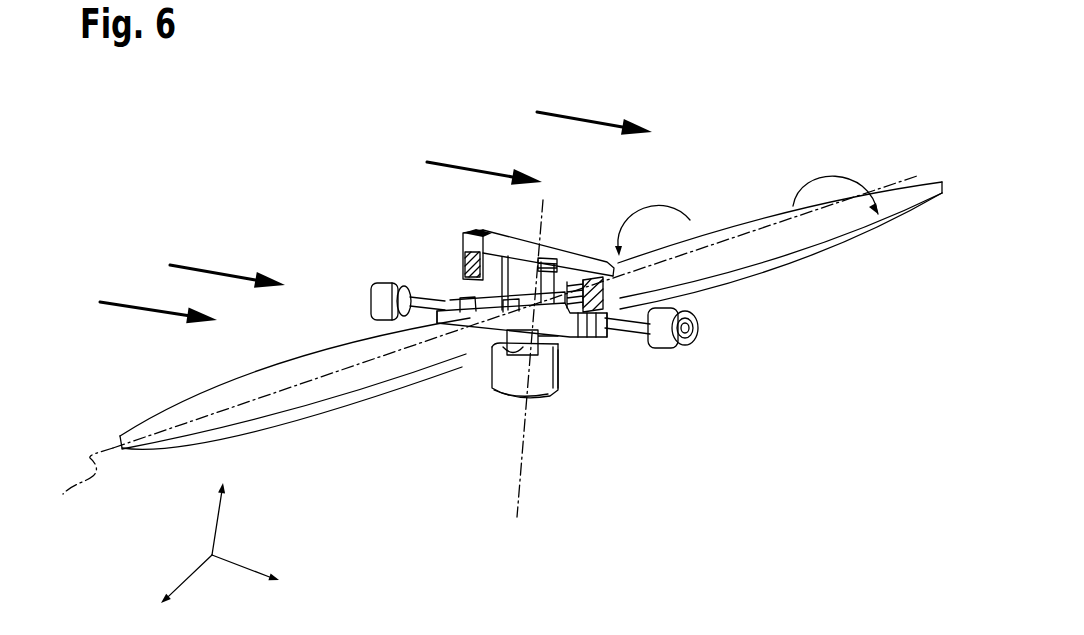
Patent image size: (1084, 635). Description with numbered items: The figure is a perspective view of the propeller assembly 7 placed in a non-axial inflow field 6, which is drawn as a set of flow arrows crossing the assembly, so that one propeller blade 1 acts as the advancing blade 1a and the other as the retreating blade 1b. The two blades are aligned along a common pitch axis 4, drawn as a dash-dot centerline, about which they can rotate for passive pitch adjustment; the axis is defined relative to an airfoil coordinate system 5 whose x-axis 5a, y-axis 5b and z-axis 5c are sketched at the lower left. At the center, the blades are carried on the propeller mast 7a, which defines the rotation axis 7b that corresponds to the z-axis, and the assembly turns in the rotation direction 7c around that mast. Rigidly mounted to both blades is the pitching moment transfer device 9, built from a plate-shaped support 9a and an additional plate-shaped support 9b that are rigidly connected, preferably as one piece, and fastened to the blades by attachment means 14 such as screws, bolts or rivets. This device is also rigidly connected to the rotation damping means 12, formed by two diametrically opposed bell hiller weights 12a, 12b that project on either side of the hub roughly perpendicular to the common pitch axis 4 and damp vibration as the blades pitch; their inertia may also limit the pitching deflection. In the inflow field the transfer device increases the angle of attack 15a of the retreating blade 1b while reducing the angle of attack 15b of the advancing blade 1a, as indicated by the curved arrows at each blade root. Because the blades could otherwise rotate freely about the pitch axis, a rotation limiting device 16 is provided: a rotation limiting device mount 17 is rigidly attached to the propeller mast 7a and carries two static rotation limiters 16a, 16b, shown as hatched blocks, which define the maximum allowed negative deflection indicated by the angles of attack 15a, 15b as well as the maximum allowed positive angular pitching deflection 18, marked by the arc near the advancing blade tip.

The propeller blade 1 is at (497, 315).
The advancing blade 1a is at (834, 230).
The retreating blade 1b is at (253, 387).
The pitch axis 4 is at (482, 349).
The airfoil coordinate system 5 is at (224, 541).
The x-axis 5a is at (250, 563).
The y-axis 5b is at (193, 567).
The z-axis 5c is at (217, 513).
The non-axial inflow field 6 is at (193, 244).
The propeller assembly 7 is at (765, 134).
The propeller mast 7a is at (500, 413).
The rotation axis 7b is at (524, 376).
The rotation direction 7c is at (566, 350).
The pitching moment transfer device 9 is at (540, 410).
The plate-shaped support 9a is at (537, 312).
The additional plate-shaped support 9b is at (573, 362).
The rotation damping means 12 is at (535, 347).
The bell hiller weight 12a is at (378, 298).
The bell hiller weight 12b is at (683, 309).
The attachment means 14 is at (532, 302).
The angle of attack of the retreating blade 15a is at (432, 344).
The angle of attack of the advancing blade 15b is at (667, 206).
The rotation limiting device 16 is at (519, 300).
The static rotation limiter 16a is at (448, 254).
The static rotation limiter 16b is at (622, 338).
The rotation limiting device mount 17 is at (490, 230).
The maximum allowed positive angular pitching deflection 18 is at (833, 173).